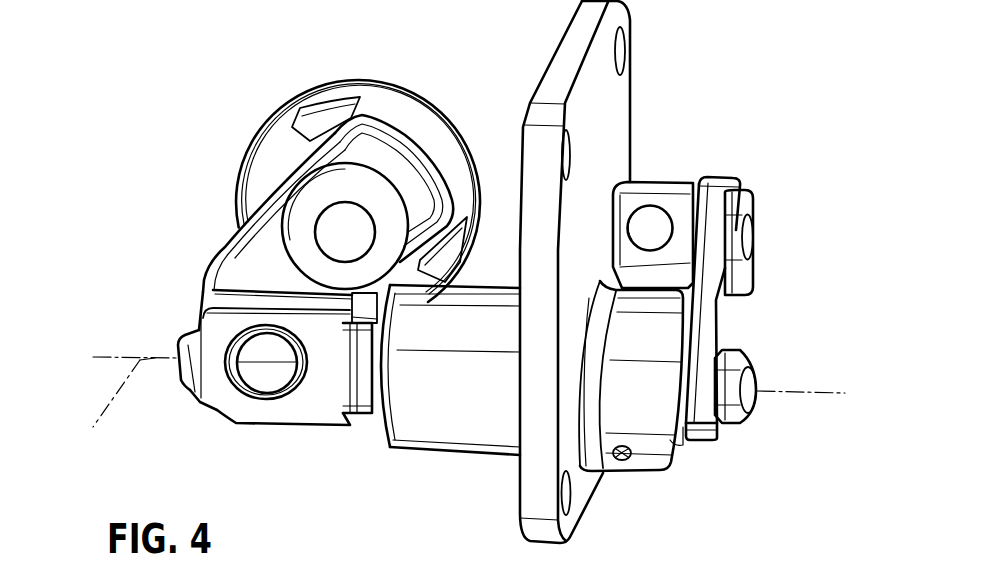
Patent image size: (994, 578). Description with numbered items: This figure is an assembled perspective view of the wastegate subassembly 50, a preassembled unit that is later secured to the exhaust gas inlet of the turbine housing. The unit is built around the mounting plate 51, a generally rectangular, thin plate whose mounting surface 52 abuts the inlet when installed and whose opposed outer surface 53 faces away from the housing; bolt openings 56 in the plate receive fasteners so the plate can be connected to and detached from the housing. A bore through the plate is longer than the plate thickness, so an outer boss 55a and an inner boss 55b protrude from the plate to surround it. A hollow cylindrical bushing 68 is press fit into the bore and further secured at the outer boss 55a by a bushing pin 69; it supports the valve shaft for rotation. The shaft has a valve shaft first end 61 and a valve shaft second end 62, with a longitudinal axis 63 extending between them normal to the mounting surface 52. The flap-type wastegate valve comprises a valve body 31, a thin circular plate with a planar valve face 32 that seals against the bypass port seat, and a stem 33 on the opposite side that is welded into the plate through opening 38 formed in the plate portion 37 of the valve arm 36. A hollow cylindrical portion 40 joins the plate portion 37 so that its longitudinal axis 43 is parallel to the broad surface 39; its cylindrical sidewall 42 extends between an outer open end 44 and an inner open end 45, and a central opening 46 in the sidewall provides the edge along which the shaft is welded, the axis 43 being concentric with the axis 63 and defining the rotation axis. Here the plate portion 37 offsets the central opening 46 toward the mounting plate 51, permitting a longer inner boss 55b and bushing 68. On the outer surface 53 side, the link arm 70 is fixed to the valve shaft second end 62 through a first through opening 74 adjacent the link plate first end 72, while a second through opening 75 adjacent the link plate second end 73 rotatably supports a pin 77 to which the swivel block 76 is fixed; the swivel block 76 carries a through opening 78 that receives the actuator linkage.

The valve body 31 is at (383, 105).
The planar valve face 32 is at (339, 80).
The stem 33 is at (322, 227).
The valve arm 36 is at (246, 257).
The plate portion 37 is at (279, 201).
The plate through opening 38 is at (363, 203).
The broad surface 39 is at (222, 276).
The cylindrical portion 40 is at (281, 430).
The cylindrical sidewall 42 is at (210, 332).
The longitudinal axis 43 is at (99, 406).
The outer open end 44 is at (203, 400).
The inner open end 45 is at (355, 407).
The central opening 46 is at (250, 392).
The wastegate subassembly 50 is at (196, 112).
The mounting plate 51 is at (603, 95).
The mounting surface 52 is at (548, 58).
The outer surface 53 is at (613, 143).
The outer boss 55a is at (657, 465).
The inner boss 55b is at (450, 432).
The bolt openings 56 is at (622, 52).
The valve shaft first end 61 is at (183, 383).
The valve shaft second end 62 is at (742, 367).
The longitudinal axis 63 is at (147, 359).
The bushing 68 is at (673, 433).
The bushing pin 69 is at (618, 458).
The link arm 70 is at (730, 320).
The link plate first end 72 is at (707, 437).
The link plate second end 73 is at (717, 182).
The first through opening 74 is at (717, 407).
The second through opening 75 is at (748, 213).
The swivel block 76 is at (655, 198).
The pin 77 is at (752, 240).
The through opening 78 is at (637, 226).